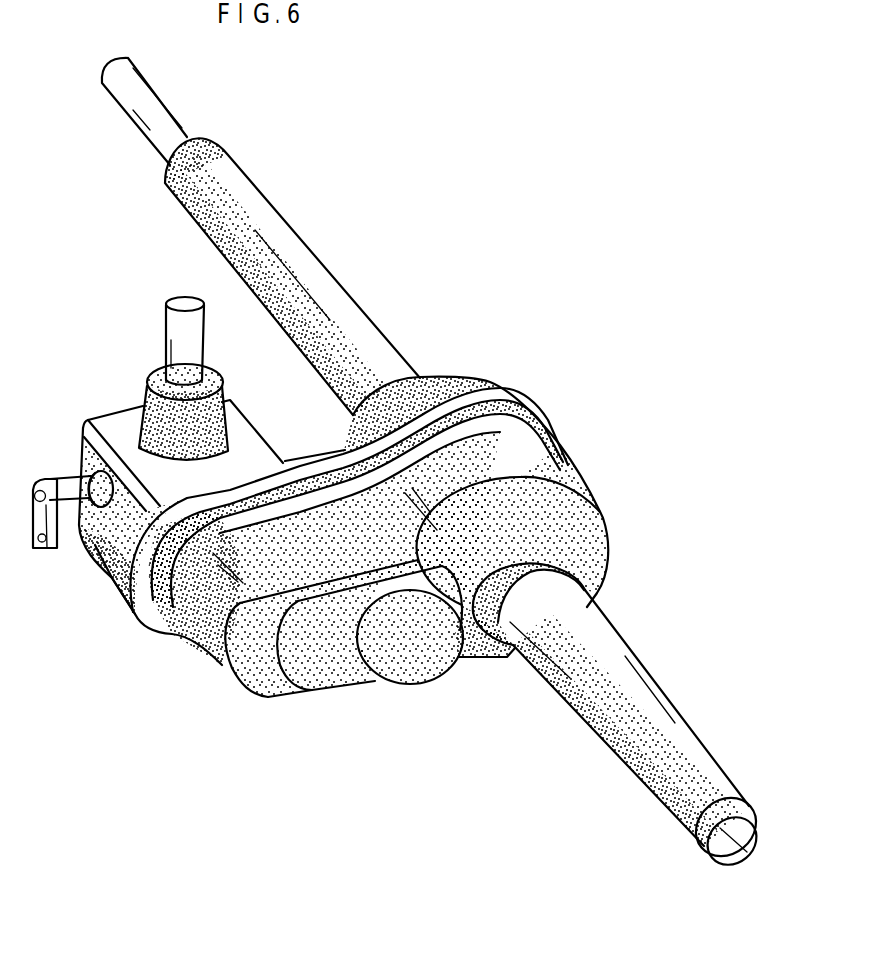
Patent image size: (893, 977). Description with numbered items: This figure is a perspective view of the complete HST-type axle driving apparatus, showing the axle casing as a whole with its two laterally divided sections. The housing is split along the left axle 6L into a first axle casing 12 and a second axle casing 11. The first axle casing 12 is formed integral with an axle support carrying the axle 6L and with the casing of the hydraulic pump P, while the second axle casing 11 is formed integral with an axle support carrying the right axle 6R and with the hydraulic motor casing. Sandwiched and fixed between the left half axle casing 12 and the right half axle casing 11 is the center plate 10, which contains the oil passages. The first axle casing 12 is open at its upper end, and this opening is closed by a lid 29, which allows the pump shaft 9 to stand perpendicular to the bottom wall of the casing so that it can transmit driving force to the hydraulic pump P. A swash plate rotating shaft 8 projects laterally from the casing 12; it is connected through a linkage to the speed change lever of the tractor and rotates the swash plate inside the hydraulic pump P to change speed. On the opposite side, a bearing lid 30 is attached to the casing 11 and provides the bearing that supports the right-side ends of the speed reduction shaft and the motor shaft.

The axle 6L is at (177, 111).
The axle 6R is at (727, 862).
The swash plate rotating shaft 8 is at (63, 483).
The pump shaft 9 is at (166, 334).
The center plate 10 is at (527, 391).
The second axle casing 11 is at (600, 512).
The first axle casing 12 is at (82, 446).
The lid 29 is at (250, 421).
The bearing lid 30 is at (330, 692).
The hydraulic pump P is at (92, 570).